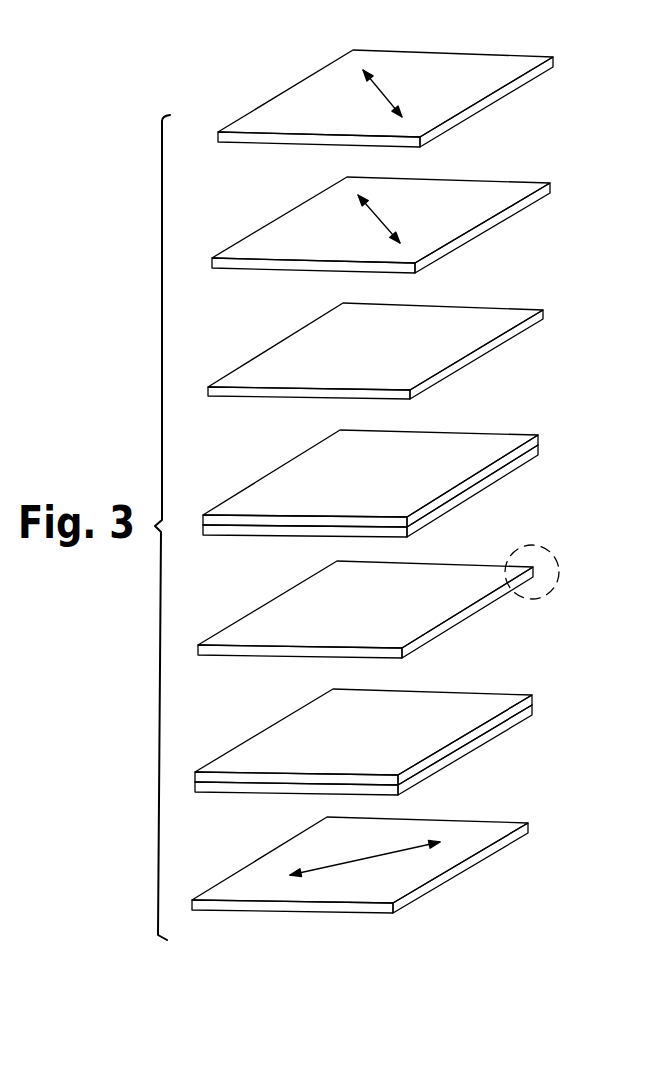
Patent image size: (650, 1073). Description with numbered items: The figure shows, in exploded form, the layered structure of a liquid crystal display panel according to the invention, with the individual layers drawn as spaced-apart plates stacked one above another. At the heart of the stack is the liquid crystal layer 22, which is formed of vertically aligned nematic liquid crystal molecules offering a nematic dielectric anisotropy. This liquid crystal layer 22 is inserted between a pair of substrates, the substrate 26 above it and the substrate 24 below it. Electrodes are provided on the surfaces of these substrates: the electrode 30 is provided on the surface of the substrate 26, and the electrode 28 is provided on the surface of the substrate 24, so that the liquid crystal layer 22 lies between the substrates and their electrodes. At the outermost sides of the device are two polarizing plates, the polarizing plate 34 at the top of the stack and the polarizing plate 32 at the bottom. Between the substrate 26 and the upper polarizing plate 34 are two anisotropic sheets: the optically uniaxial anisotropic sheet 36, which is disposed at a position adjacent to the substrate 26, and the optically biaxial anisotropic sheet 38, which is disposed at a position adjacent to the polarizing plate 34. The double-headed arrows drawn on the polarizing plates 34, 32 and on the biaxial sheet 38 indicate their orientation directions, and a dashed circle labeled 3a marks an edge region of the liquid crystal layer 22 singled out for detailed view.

The polarizing plate 34 is at (252, 110).
The optically biaxial anisotropic sheet 38 is at (252, 233).
The optically uniaxial anisotropic sheet 36 is at (250, 360).
The substrate 26 is at (242, 487).
The electrode 30 is at (223, 530).
The liquid crystal layer 22 is at (272, 598).
The electrode 28 is at (227, 750).
The substrate 24 is at (208, 790).
The polarizing plate 32 is at (265, 853).
The enlarged detail region 3a is at (550, 550).